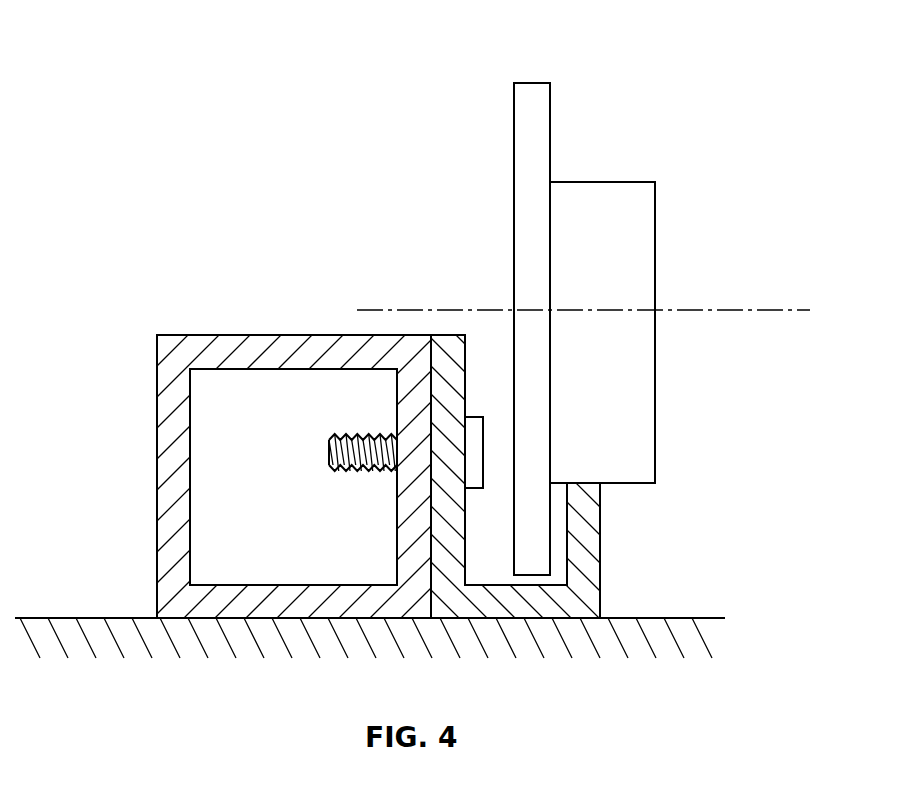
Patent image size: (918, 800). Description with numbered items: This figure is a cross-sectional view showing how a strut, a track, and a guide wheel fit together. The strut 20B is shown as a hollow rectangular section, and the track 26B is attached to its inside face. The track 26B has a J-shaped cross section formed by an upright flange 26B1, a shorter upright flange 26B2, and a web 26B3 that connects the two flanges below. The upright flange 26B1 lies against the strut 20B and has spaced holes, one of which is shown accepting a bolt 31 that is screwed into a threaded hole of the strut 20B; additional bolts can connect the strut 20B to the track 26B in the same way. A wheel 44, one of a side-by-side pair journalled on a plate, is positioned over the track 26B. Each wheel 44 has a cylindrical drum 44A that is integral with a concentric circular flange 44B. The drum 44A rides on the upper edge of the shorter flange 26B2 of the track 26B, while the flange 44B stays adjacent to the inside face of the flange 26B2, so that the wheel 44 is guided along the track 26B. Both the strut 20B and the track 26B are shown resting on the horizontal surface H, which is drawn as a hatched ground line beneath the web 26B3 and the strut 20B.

The horizontal surface H is at (62, 617).
The strut 20B is at (157, 352).
The bolt 31 is at (330, 452).
The track 26B is at (593, 476).
The upright flange 26B1 is at (467, 345).
The shorter upright flange 26B2 is at (600, 508).
The web 26B3 is at (518, 618).
The wheel 44 is at (583, 295).
The cylindrical drum 44A is at (602, 181).
The circular flange 44B is at (532, 82).